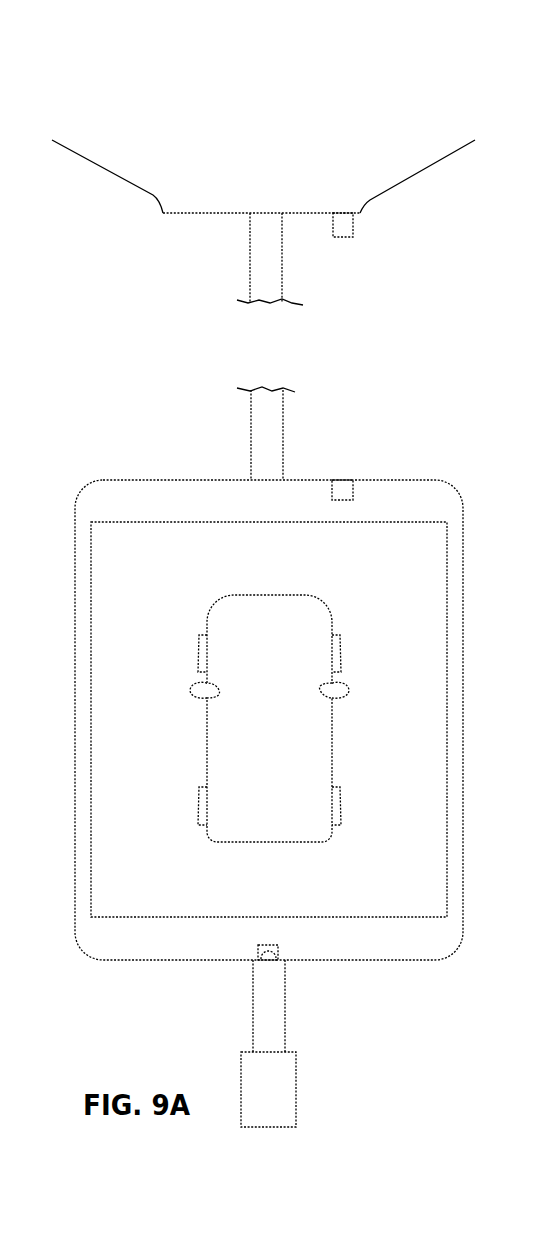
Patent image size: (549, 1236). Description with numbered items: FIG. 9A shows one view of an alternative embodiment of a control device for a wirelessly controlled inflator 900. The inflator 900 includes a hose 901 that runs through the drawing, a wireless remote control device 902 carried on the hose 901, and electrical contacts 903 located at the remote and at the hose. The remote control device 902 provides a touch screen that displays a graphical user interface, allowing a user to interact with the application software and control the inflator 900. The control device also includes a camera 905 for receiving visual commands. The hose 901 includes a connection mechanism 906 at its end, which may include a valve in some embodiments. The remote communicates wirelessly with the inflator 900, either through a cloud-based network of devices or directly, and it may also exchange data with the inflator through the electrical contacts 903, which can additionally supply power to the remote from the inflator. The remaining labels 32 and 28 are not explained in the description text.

The inflator 900 is at (151, 72).
The hose 901 is at (168, 480).
The wireless remote control device 902 is at (188, 512).
The electrical contacts 903 is at (353, 237).
The camera 905 is at (278, 952).
The connection mechanism 906 is at (296, 1068).
The sensor 32 is at (271, 731).
The sensor 28 is at (368, 807).